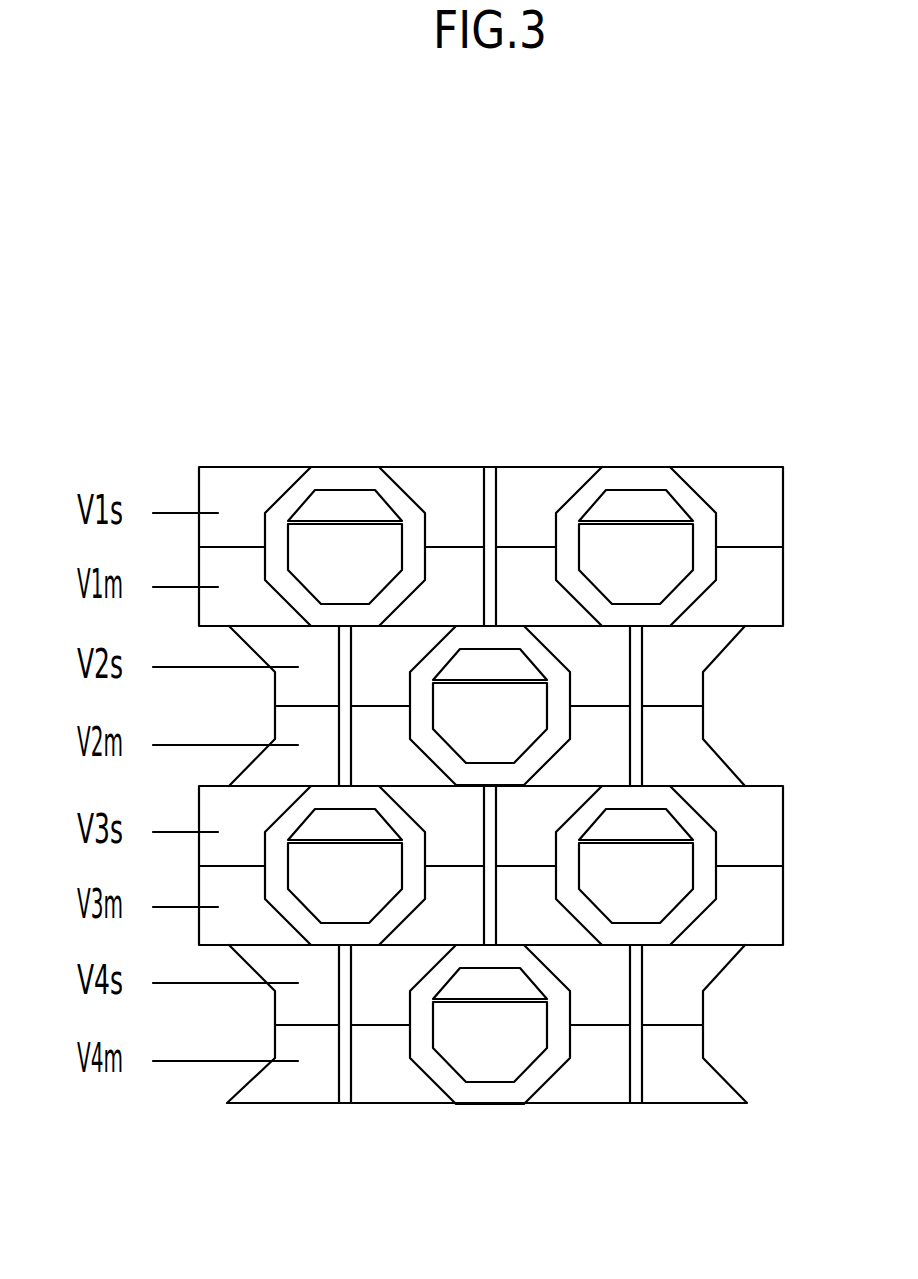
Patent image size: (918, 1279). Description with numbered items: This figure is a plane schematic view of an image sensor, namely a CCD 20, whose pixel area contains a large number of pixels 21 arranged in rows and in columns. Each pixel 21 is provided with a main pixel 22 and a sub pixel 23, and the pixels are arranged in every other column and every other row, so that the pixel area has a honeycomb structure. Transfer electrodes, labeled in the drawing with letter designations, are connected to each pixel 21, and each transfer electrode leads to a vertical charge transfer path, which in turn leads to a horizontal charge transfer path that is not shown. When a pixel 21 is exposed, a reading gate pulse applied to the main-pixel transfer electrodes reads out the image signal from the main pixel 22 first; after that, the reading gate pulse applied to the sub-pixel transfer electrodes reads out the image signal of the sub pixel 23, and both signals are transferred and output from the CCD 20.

The CCD 20 is at (656, 302).
The pixel 21 is at (345, 506).
The main pixel 22 is at (316, 556).
The sub pixel 23 is at (318, 507).